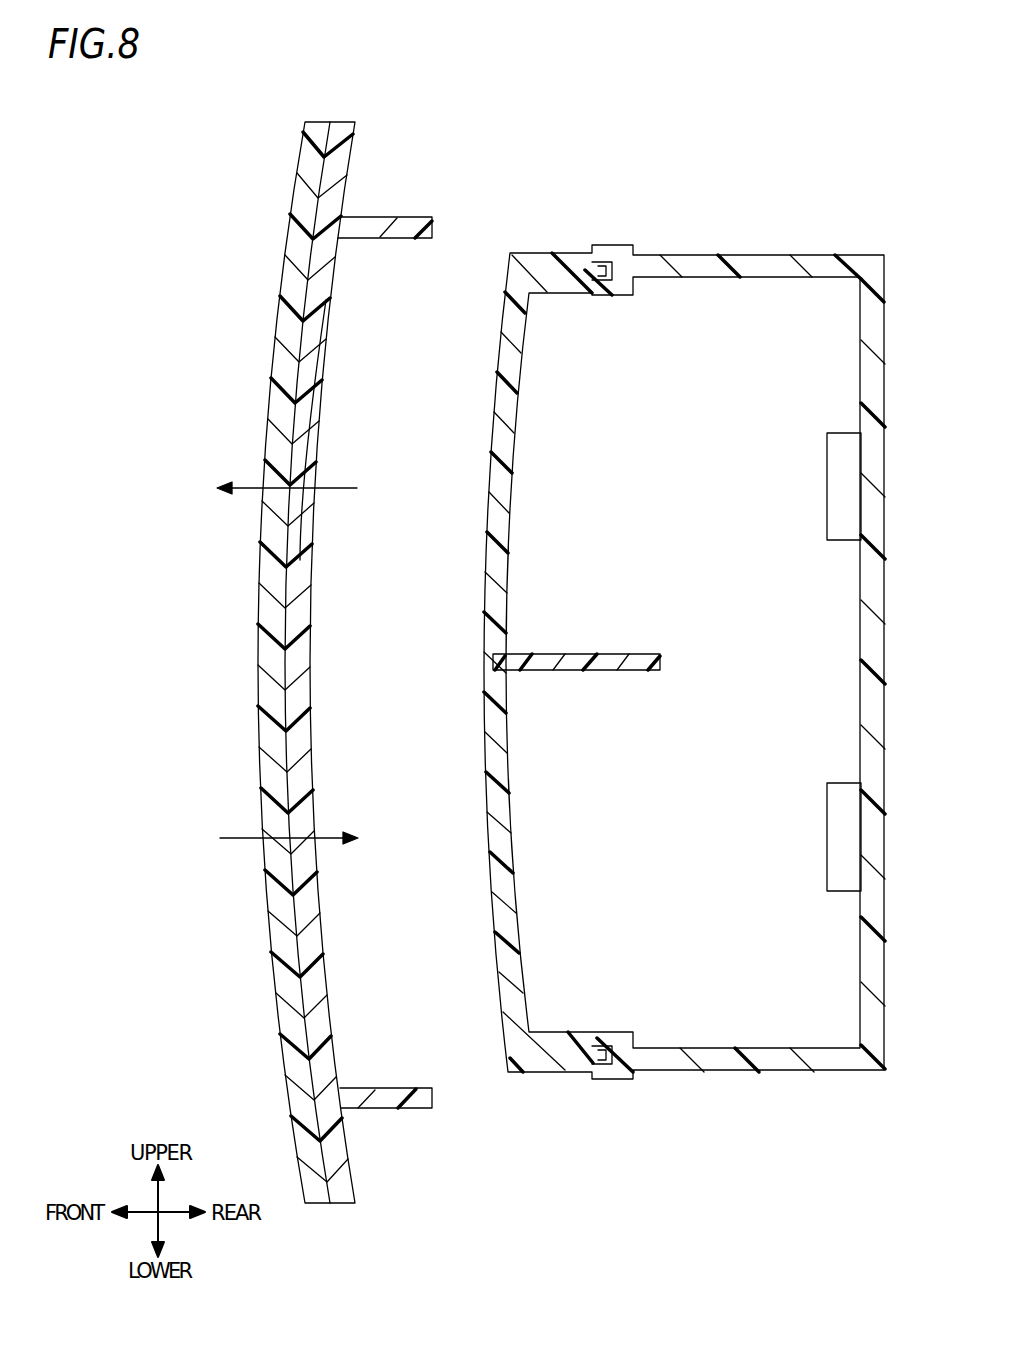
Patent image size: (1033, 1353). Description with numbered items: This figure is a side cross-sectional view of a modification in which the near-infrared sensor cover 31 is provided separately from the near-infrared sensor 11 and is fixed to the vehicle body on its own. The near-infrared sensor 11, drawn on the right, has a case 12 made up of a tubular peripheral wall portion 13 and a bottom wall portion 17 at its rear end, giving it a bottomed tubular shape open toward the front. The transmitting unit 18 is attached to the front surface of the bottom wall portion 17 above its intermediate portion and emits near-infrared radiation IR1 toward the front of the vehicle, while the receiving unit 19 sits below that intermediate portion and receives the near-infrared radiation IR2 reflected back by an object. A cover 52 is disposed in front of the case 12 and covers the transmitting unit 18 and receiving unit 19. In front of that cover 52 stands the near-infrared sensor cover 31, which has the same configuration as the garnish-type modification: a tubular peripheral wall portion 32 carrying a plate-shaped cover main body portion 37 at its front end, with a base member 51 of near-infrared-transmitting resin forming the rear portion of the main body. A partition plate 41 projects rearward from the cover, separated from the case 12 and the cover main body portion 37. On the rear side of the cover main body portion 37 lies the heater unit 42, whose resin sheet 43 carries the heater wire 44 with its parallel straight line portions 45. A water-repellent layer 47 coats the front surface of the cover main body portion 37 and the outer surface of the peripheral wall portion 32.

The near-infrared sensor 11 is at (671, 649).
The case 12 is at (795, 601).
The peripheral wall portion 13 is at (808, 262).
The bottom wall portion 17 is at (885, 294).
The transmitting unit 18 is at (838, 486).
The receiving unit 19 is at (838, 837).
The near-infrared sensor cover 31 is at (319, 641).
The peripheral wall portion 32 is at (373, 225).
The cover main body portion 37 is at (334, 137).
The partition plate 41 is at (600, 668).
The heater unit 42 is at (326, 1002).
The resin sheet 43 is at (327, 320).
The heater wire 44 is at (314, 897).
The straight line portions 45 is at (314, 508).
The water-repellent layer 47 is at (258, 664).
The base member 51 is at (293, 673).
The cover 52 is at (491, 590).
The near-infrared radiation IR1 is at (330, 488).
The near-infrared radiation IR2 is at (331, 838).